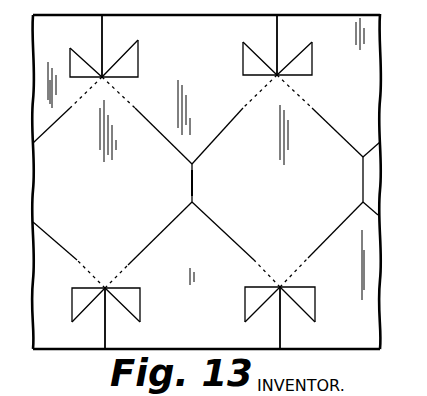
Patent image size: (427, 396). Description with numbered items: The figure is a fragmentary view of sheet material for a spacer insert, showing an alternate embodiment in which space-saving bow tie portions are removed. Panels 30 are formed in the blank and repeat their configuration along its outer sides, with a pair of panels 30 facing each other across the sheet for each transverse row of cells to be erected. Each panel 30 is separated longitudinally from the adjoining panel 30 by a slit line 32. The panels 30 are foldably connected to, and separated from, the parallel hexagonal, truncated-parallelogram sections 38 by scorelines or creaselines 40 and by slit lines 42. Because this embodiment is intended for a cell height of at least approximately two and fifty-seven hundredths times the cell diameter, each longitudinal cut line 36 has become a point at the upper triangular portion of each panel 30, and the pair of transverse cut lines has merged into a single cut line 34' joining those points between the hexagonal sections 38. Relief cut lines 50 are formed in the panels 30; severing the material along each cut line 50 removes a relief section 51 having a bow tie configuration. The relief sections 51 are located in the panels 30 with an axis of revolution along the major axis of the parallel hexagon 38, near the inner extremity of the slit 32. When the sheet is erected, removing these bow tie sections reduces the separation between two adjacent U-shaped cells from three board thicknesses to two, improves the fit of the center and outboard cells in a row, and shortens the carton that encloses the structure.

The panel 30 is at (204, 68).
The slit line 32 is at (108, 320).
The single cut line 34' is at (217, 181).
The longitudinal cut line 36 is at (189, 164).
The parallel hexagonal truncated-parallelogram section 38 is at (113, 198).
The scoreline 40 is at (104, 284).
The slit line 42 is at (42, 220).
The relief cut line 50 is at (80, 58).
The relief section 51 is at (128, 53).